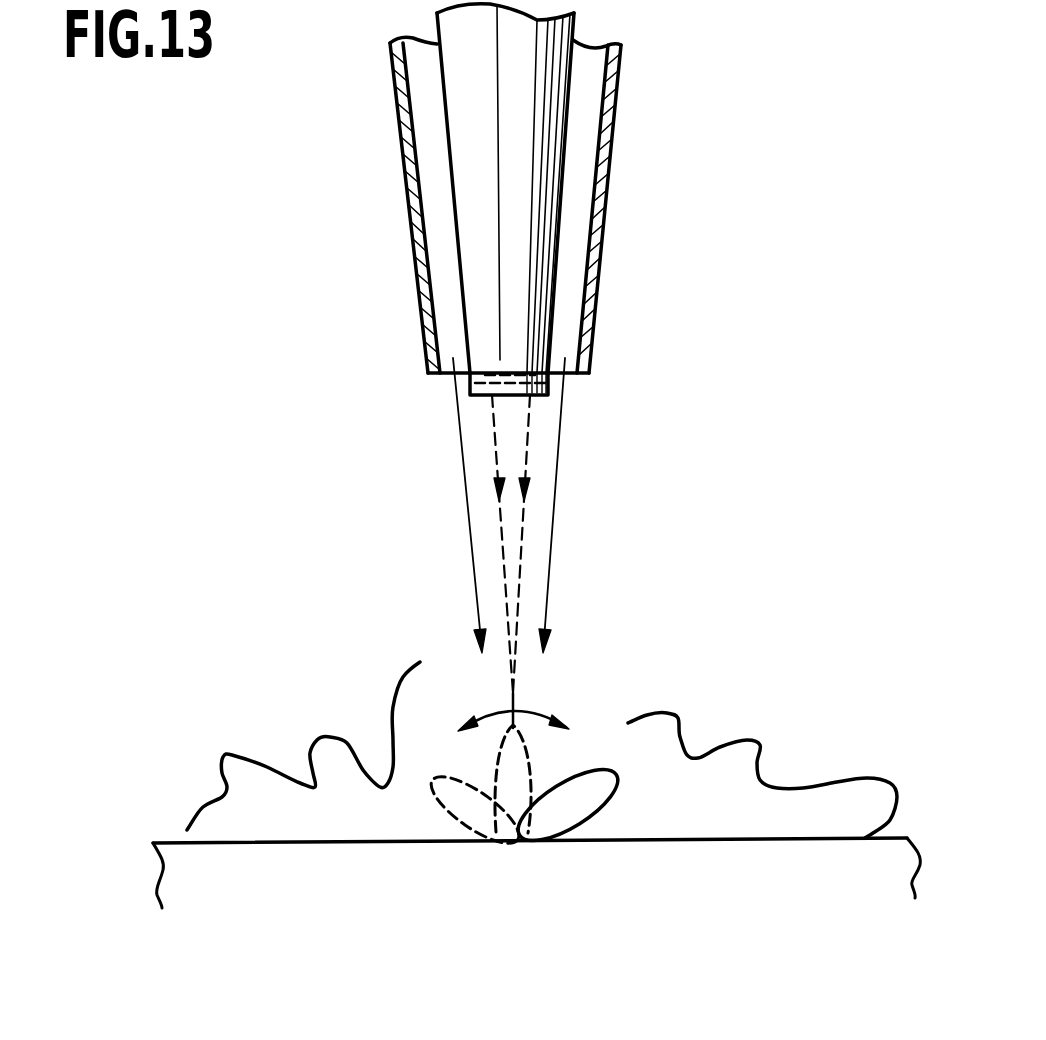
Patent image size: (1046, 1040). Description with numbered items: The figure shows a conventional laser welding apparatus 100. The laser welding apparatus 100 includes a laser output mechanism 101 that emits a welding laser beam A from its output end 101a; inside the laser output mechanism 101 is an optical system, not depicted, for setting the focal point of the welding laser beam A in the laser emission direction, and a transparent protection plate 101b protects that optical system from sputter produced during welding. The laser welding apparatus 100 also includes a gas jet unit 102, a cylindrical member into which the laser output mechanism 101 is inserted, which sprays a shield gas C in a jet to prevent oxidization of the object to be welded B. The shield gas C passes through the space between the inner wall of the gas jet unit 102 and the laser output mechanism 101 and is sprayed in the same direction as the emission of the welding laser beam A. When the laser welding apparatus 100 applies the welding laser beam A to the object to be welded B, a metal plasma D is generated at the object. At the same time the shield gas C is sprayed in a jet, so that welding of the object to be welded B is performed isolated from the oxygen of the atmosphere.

The laser welding apparatus 100 is at (678, 121).
The laser output mechanism 101 is at (468, 170).
The output end 101a is at (500, 398).
The transparent protection plate 101b is at (497, 357).
The gas jet unit 102 is at (602, 258).
The welding laser beam A is at (500, 530).
The object to be welded B is at (420, 868).
The shield gas C is at (550, 573).
The metal plasma D is at (590, 820).